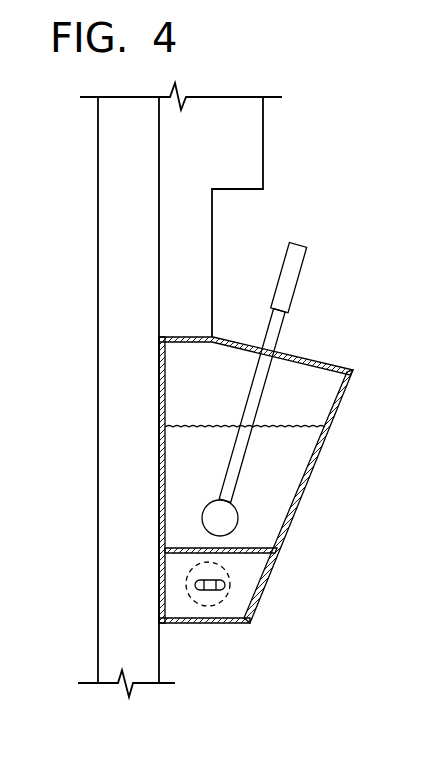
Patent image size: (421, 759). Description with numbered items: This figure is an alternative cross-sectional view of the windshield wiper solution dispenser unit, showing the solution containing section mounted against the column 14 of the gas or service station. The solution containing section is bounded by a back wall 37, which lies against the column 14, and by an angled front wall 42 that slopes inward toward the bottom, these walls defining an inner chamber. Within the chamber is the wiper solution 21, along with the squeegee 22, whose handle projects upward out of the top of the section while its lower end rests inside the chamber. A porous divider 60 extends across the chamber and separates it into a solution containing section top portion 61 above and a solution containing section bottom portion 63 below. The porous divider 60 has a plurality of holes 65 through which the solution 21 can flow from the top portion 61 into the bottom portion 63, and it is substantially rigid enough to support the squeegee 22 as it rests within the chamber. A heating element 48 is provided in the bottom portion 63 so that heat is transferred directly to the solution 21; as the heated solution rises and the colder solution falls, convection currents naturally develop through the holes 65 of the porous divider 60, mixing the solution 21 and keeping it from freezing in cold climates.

The column 14 is at (115, 354).
The wiper solution 21 is at (196, 427).
The back wall 37 is at (158, 445).
The solution containing section bottom portion 63 is at (173, 580).
The squeegee 22 is at (290, 290).
The solution containing section top portion 61 is at (305, 388).
The angled front wall 42 is at (316, 462).
The holes 65 is at (228, 545).
The porous divider 60 is at (240, 555).
The heating element 48 is at (228, 587).